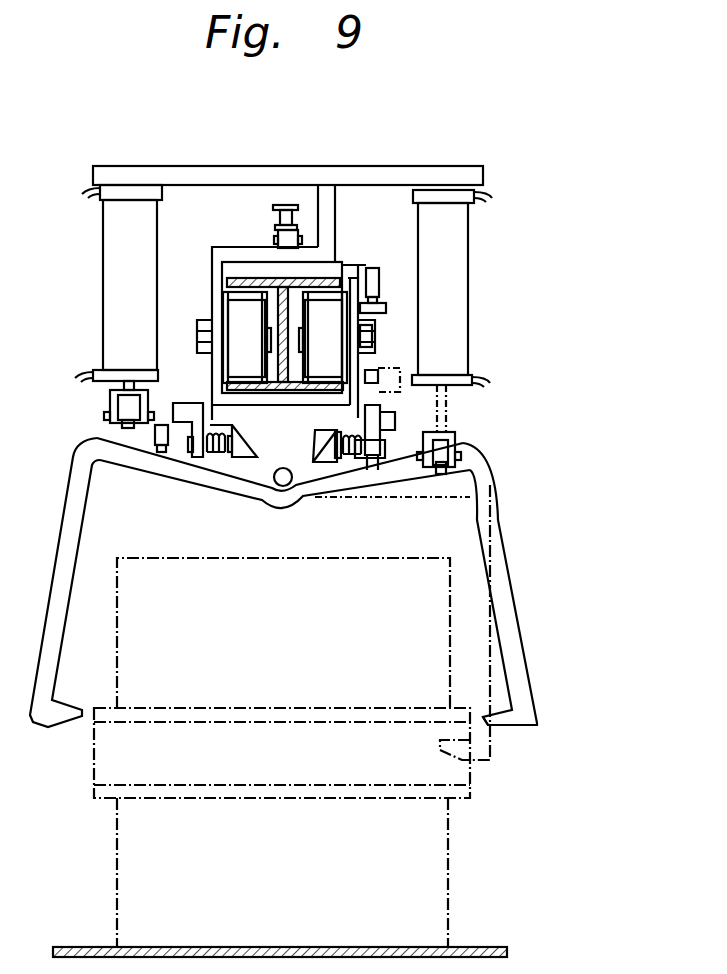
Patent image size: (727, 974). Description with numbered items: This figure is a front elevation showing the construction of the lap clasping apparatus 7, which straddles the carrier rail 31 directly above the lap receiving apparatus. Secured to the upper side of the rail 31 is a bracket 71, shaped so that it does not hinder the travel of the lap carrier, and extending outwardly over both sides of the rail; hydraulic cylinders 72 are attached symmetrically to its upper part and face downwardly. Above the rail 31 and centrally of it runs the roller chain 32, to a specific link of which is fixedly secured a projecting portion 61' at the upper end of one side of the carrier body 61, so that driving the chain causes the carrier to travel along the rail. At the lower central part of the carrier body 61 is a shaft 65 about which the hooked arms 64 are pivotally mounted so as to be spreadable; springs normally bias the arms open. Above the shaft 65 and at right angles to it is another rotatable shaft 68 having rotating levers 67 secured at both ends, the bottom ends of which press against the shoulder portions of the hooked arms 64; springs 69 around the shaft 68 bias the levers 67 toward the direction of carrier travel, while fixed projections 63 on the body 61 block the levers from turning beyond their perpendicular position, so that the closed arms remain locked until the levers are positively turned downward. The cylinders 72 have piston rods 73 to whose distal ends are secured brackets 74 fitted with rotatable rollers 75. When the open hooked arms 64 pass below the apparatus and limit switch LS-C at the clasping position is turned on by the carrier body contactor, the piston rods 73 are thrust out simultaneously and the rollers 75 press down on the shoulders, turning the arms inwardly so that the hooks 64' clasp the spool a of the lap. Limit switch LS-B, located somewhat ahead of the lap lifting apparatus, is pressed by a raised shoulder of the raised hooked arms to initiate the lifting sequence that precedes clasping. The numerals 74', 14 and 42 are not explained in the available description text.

The lap clasping apparatus 7 is at (273, 268).
The bracket 71 is at (242, 177).
The hydraulic cylinder 72 is at (462, 244).
The piston rod 73 is at (98, 382).
The roller chain 32 is at (292, 207).
The rail 31 is at (305, 280).
The projecting portion 61' is at (310, 323).
The fixed projection 63 is at (375, 345).
The limit switch LS-C is at (412, 264).
The rotating lever 67 is at (372, 380).
The rotatable shaft 68 is at (386, 460).
The spring 69 is at (205, 462).
The carrier body 61 is at (273, 475).
The limit switch LS-B is at (157, 448).
The bracket 74 is at (102, 402).
The roller bracket 74' is at (471, 426).
The roller 75 is at (128, 424).
The hooked arm 64 is at (294, 605).
The tip of hooked arm 64' is at (520, 745).
The shaft 65 is at (283, 487).
The spool a is at (94, 790).
The pedestal 14 is at (448, 836).
The base plate 42 is at (483, 948).